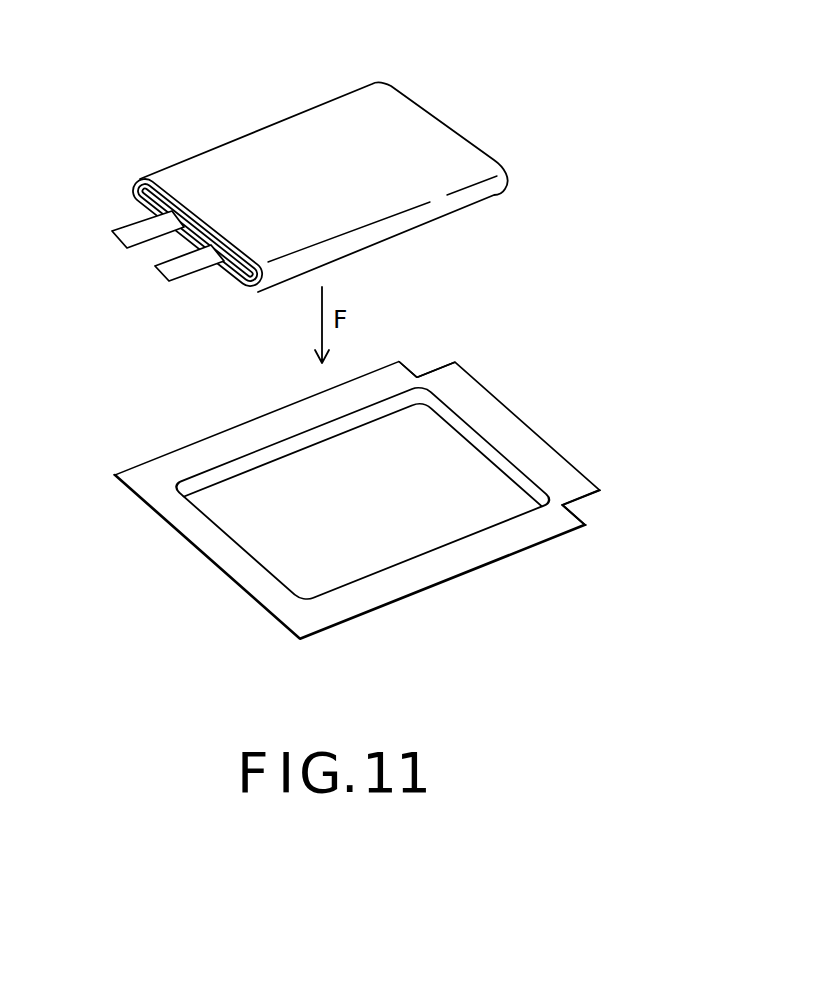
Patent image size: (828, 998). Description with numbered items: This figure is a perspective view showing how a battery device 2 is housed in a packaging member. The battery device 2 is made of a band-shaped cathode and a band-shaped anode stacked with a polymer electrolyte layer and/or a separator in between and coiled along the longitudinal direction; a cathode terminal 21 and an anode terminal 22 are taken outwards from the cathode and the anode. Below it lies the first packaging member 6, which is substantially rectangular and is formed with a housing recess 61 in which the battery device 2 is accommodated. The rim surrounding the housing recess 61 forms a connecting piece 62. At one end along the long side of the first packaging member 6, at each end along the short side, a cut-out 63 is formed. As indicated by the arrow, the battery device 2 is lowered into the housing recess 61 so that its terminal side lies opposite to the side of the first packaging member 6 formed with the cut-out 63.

The battery device 2 is at (275, 175).
The cathode terminal 21 is at (112, 237).
The anode terminal 22 is at (160, 274).
The first packaging member 6 is at (395, 470).
The housing recess 61 is at (368, 552).
The connecting piece 62 is at (253, 432).
The cut-out 63 is at (425, 351).